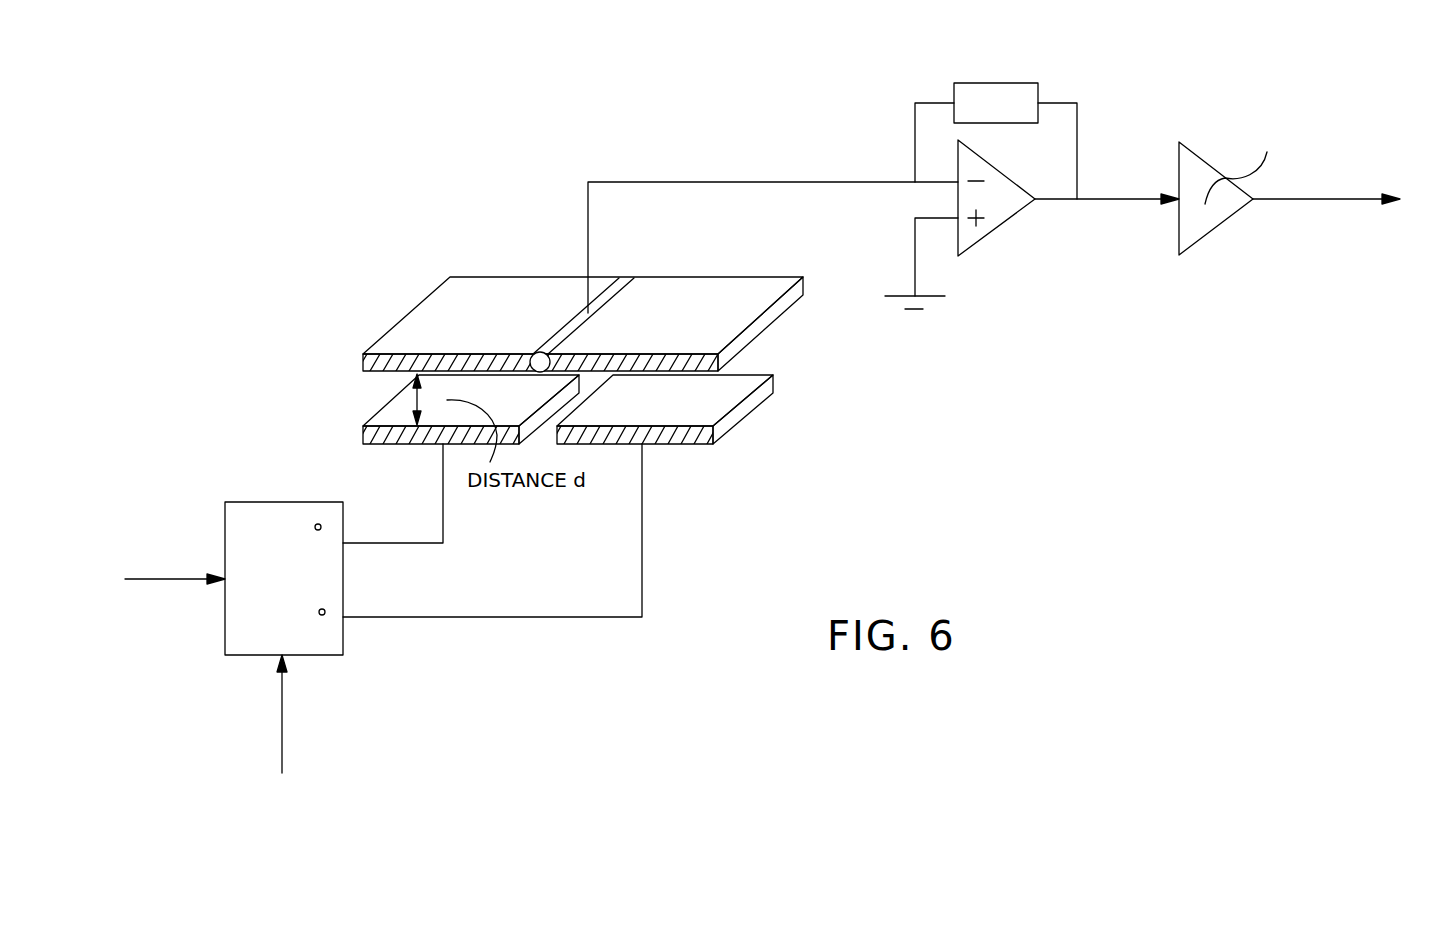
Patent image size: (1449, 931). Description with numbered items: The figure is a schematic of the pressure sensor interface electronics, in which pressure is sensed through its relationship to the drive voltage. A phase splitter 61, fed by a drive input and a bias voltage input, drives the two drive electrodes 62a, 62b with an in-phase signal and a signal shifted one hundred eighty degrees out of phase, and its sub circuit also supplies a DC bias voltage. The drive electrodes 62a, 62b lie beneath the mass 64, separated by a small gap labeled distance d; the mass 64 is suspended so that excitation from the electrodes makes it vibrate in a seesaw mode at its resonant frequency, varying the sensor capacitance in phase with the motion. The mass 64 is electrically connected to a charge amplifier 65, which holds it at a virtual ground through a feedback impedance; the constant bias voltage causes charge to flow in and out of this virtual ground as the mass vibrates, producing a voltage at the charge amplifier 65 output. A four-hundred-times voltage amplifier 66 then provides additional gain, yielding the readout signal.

The phase splitter 61 is at (364, 648).
The drive electrode 62a is at (370, 398).
The drive electrode 62b is at (758, 424).
The mass 64 is at (777, 334).
The charge amplifier 65 is at (993, 252).
The 400× voltage amplifier 66 is at (1225, 244).